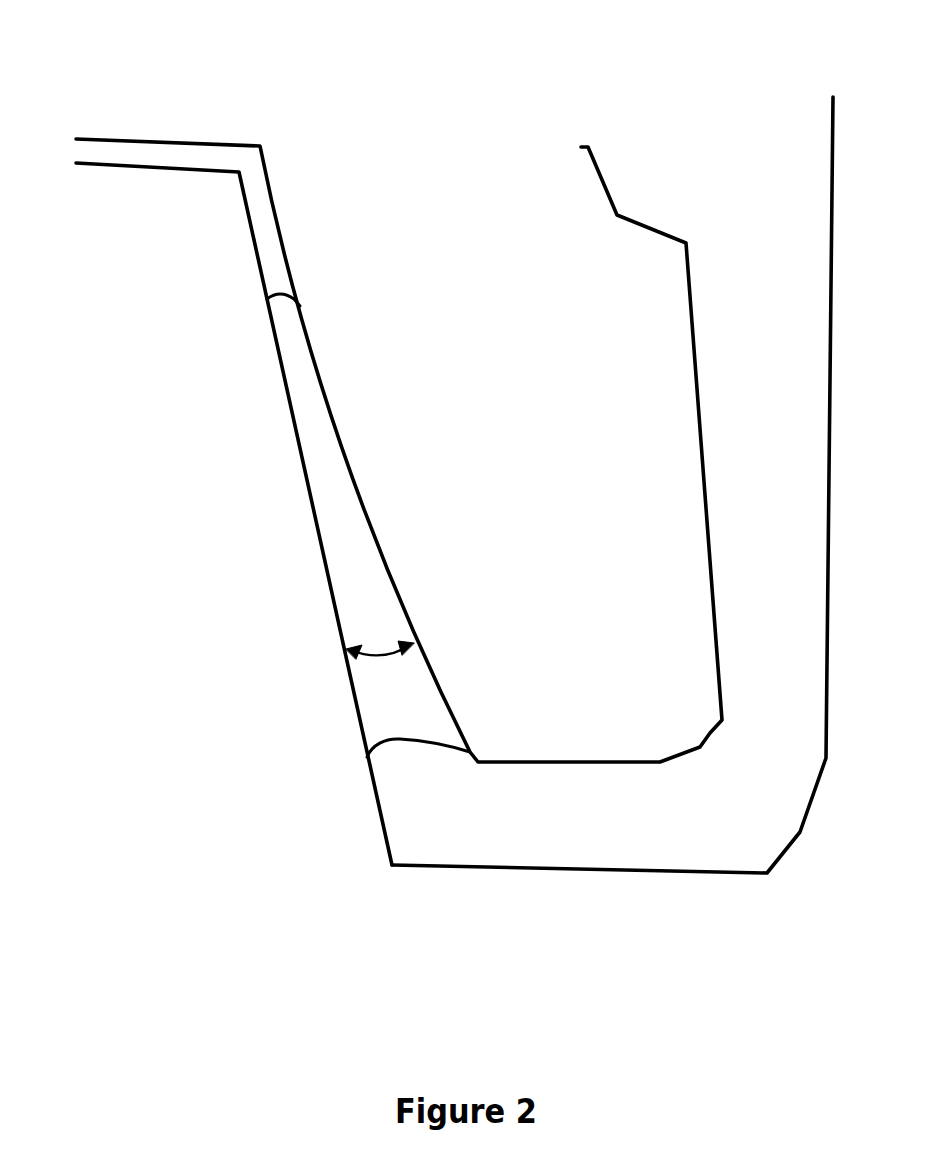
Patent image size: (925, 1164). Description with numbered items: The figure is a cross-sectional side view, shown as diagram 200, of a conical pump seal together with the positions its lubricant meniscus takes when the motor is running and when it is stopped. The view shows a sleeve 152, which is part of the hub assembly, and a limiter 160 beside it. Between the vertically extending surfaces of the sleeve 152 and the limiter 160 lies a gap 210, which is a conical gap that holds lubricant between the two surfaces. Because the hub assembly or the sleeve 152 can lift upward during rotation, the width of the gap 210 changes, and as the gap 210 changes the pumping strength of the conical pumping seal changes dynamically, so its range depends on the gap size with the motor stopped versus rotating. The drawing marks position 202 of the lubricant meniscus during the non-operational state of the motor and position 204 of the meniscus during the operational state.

The diagram 200 is at (68, 40).
The sleeve 152 is at (315, 522).
The position of the meniscus during an operational state 204 is at (287, 293).
The gap 210 is at (385, 657).
The position of the meniscus during a non-operational state 202 is at (407, 741).
The limiter 160 is at (608, 691).